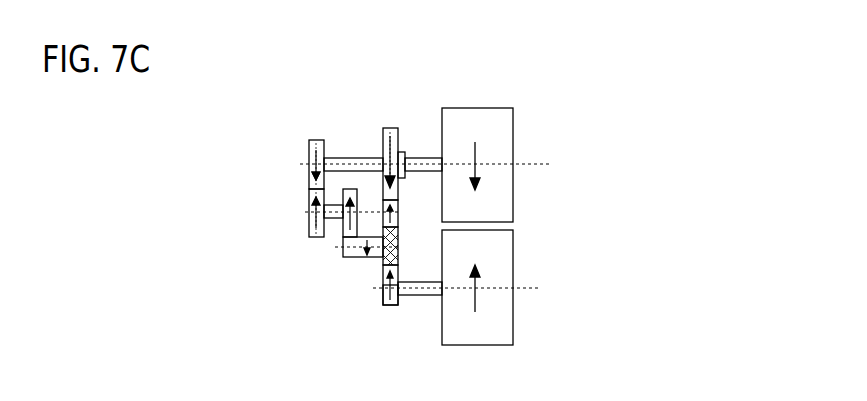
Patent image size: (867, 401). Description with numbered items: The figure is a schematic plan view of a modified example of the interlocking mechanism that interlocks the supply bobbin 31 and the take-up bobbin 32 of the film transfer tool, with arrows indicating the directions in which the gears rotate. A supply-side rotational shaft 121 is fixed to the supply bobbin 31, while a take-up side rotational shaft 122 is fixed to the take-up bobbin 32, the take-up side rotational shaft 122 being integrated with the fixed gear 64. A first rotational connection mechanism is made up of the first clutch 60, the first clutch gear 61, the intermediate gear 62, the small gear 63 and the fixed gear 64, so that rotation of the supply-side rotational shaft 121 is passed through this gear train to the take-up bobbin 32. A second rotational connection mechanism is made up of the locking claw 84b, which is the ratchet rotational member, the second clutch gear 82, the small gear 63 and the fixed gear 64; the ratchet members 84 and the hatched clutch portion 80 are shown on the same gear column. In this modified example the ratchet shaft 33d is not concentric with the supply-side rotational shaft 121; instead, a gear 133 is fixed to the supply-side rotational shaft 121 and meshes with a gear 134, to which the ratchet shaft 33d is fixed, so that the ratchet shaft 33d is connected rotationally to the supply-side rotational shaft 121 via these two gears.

The supply-side rotational shaft 121 is at (367, 158).
The take-up side rotational shaft 122 is at (420, 295).
The gear 133 is at (310, 153).
The gear 134 is at (310, 228).
The ratchet shaft 33d is at (323, 232).
The locking claw 84b is at (338, 205).
The gear 84 is at (350, 189).
The second clutch gear 82 is at (345, 257).
The clutch 80 is at (397, 257).
The first clutch gear 61 is at (387, 128).
The first clutch 60 is at (402, 152).
The intermediate gear 62 is at (399, 215).
The small gear 63 is at (383, 270).
The fixed gear 64 is at (385, 303).
The supply bobbin 31 is at (497, 123).
The take-up bobbin 32 is at (490, 317).